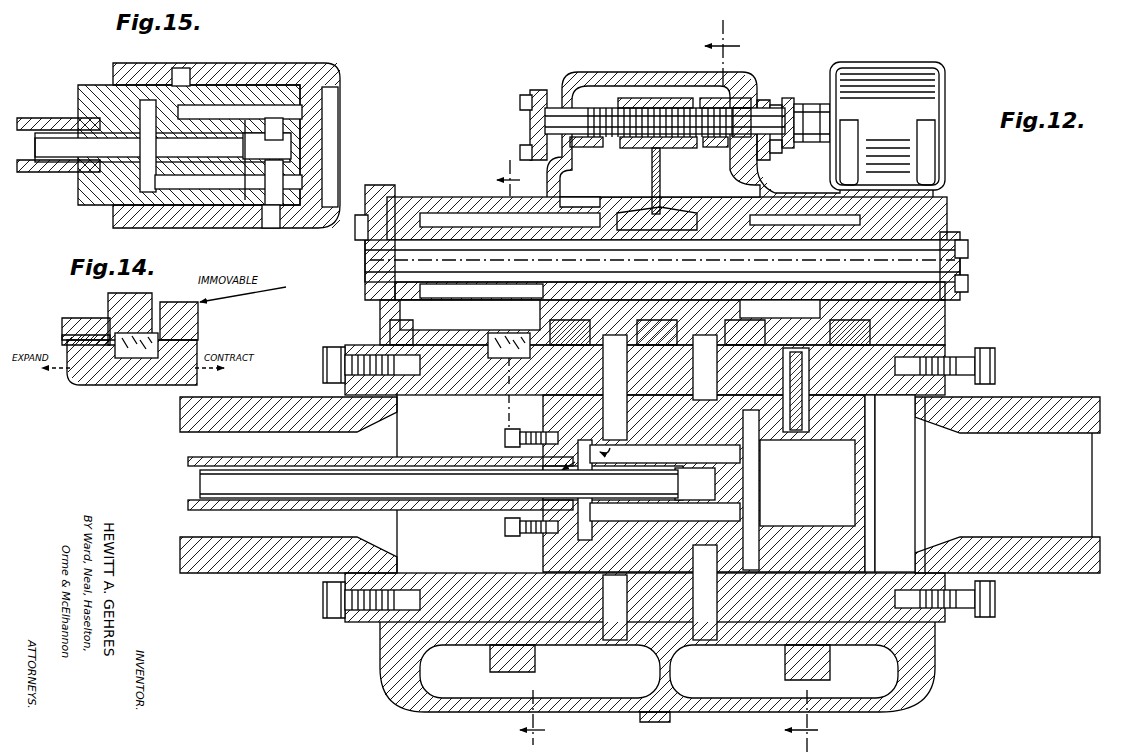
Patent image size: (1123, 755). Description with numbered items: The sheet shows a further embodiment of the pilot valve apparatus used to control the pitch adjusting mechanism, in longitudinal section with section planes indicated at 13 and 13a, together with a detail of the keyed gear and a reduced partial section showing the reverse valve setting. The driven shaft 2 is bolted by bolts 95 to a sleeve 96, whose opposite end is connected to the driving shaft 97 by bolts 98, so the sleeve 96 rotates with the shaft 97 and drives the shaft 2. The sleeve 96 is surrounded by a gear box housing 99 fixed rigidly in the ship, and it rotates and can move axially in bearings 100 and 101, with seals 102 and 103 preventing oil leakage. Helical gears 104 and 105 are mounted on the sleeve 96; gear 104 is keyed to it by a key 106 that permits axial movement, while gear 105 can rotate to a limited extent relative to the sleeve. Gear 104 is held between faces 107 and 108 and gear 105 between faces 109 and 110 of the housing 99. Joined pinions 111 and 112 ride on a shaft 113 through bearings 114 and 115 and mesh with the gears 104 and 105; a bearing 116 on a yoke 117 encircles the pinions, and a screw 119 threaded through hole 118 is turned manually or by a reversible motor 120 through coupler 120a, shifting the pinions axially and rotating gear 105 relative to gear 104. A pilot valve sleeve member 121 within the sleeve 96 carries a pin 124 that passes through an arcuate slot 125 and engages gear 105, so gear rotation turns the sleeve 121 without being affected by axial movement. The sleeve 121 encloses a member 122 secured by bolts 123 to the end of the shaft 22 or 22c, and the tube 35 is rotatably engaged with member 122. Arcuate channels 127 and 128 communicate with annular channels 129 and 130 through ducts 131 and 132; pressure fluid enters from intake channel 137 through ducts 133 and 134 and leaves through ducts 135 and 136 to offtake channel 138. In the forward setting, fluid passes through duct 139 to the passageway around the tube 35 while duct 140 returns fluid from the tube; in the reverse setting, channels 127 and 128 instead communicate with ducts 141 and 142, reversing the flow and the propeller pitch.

In FIG. 12, the driven shaft 2 is at (240, 397).
In FIG. 12, the section line 13 is at (771, 386).
In FIG. 12, the section line 13a is at (505, 452).
In FIG. 15, the shaft 22 is at (40, 120).
In FIG. 12, the shaft 22c is at (190, 461).
In FIG. 15, the tube 35 is at (70, 150).
In FIG. 12, the tube 35 is at (202, 486).
In FIG. 12, the bolts 95 is at (324, 366).
In FIG. 14, the sleeve 96 is at (78, 385).
In FIG. 12, the sleeve 96 is at (428, 388).
In FIG. 12, the driving shaft 97 is at (1058, 397).
In FIG. 12, the bolts 98 is at (996, 370).
In FIG. 14, the gear box housing 99 is at (88, 318).
In FIG. 12, the gear box housing 99 is at (905, 701).
In FIG. 14, the bearing 100 is at (65, 337).
In FIG. 12, the bearing 100 is at (430, 650).
In FIG. 12, the bearing 101 is at (882, 640).
In FIG. 12, the seal 102 is at (382, 630).
In FIG. 12, the seal 103 is at (936, 640).
In FIG. 12, the helical gear 104 is at (500, 312).
In FIG. 12, the helical gear 105 is at (825, 308).
In FIG. 14, the key 106 is at (148, 358).
In FIG. 12, the key 106 is at (500, 358).
In FIG. 12, the face 107 is at (500, 282).
In FIG. 12, the face 108 is at (528, 282).
In FIG. 12, the face 109 is at (788, 282).
In FIG. 12, the face 110 is at (820, 282).
In FIG. 12, the pinion 111 is at (566, 224).
In FIG. 12, the pinion 112 is at (745, 215).
In FIG. 12, the shaft 113 is at (436, 245).
In FIG. 12, the bearing 114 is at (470, 283).
In FIG. 12, the bearing 115 is at (850, 219).
In FIG. 12, the bearing 116 is at (630, 215).
In FIG. 12, the yoke 117 is at (652, 172).
In FIG. 12, the threaded hole 118 is at (622, 112).
In FIG. 12, the screw 119 is at (725, 115).
In FIG. 12, the reversible motor 120 is at (880, 68).
In FIG. 12, the coupler 120a is at (807, 104).
In FIG. 15, the pilot valve sleeve member 121 is at (322, 80).
In FIG. 12, the pilot valve sleeve member 121 is at (760, 422).
In FIG. 15, the sleeve member 122 is at (328, 145).
In FIG. 12, the sleeve member 122 is at (750, 490).
In FIG. 12, the bolts 123 is at (504, 438).
In FIG. 12, the pin 124 is at (792, 432).
In FIG. 12, the arcuate slot 125 is at (868, 414).
In FIG. 15, the arcuate channel 127 is at (182, 78).
In FIG. 12, the arcuate channel 127 is at (615, 422).
In FIG. 15, the arcuate channel 128 is at (282, 216).
In FIG. 12, the arcuate channel 128 is at (705, 552).
In FIG. 12, the annular channel 129 is at (615, 483).
In FIG. 12, the annular channel 130 is at (705, 486).
In FIG. 12, the duct 131 is at (614, 404).
In FIG. 12, the duct 132 is at (704, 570).
In FIG. 12, the duct 133 is at (614, 362).
In FIG. 12, the duct 134 is at (614, 604).
In FIG. 12, the duct 135 is at (704, 362).
In FIG. 12, the duct 136 is at (704, 606).
In FIG. 12, the fluid intake channel 137 is at (615, 487).
In FIG. 12, the fluid offtake channel 138 is at (705, 487).
In FIG. 12, the duct 139 is at (615, 447).
In FIG. 12, the duct 140 is at (695, 484).
In FIG. 15, the duct 141 is at (240, 112).
In FIG. 15, the duct 142 is at (245, 190).